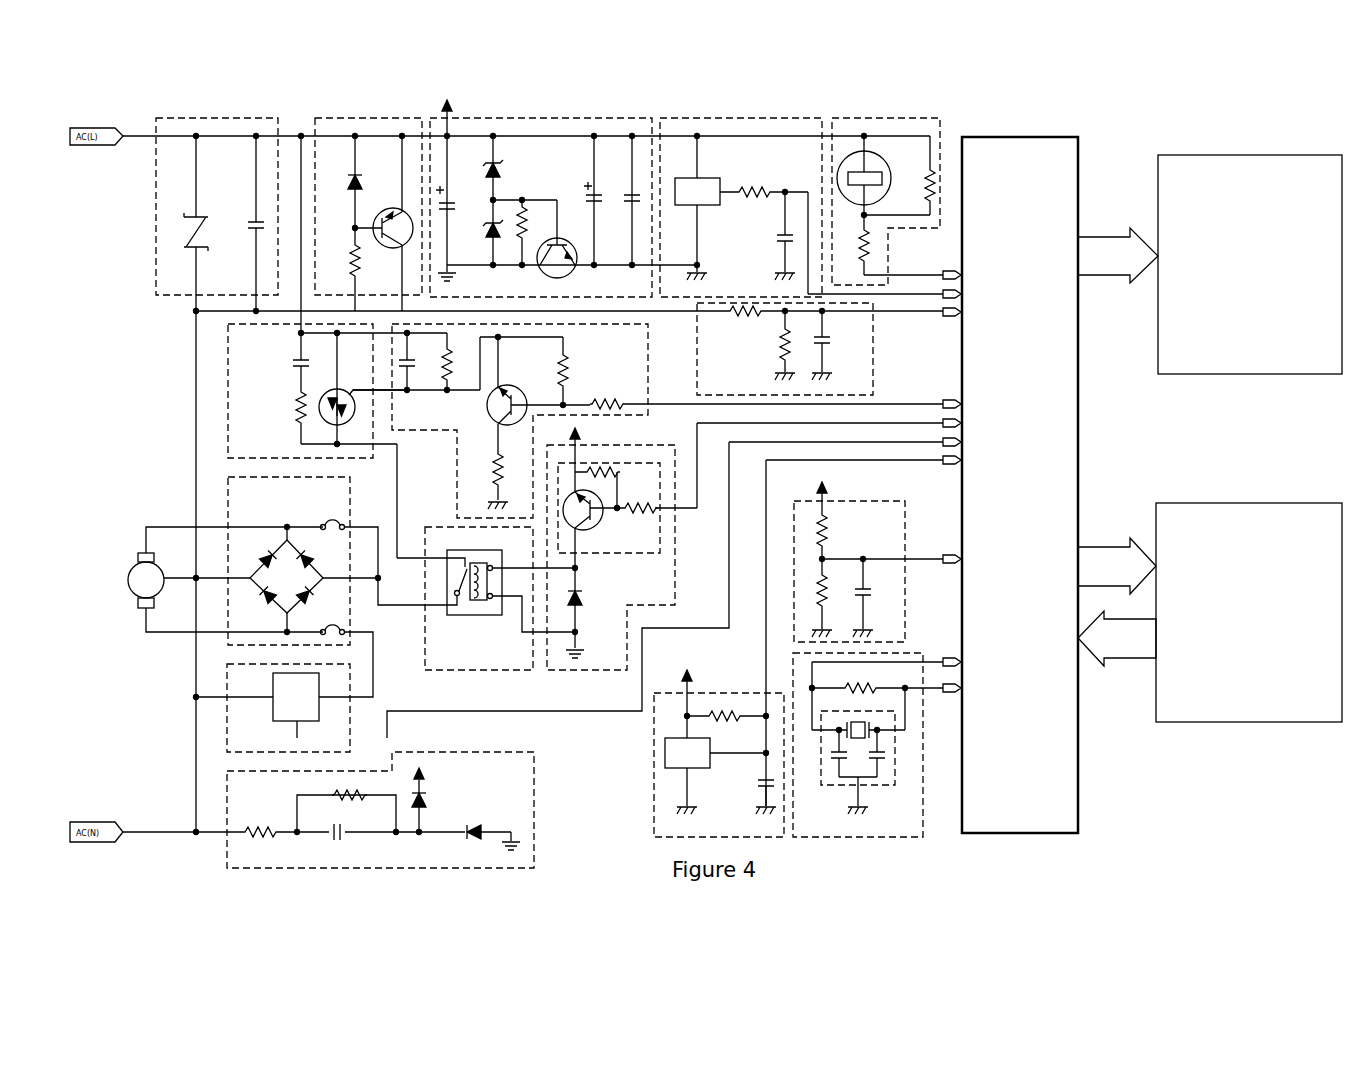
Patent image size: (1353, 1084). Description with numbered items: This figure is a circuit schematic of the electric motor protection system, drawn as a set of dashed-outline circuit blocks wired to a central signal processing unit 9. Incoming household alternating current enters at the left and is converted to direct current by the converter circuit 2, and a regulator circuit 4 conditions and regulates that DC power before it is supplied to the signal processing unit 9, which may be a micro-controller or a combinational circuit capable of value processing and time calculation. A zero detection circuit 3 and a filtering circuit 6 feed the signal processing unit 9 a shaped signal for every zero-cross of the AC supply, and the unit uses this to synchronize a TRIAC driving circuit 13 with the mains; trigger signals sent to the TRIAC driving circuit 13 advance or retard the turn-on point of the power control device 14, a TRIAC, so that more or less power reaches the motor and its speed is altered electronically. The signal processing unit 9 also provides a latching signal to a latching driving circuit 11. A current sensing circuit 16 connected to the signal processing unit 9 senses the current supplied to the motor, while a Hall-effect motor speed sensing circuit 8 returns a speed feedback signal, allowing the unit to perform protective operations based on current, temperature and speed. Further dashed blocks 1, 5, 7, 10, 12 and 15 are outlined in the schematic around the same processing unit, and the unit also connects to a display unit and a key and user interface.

The surge protection circuit 1 is at (217, 214).
The converter circuit 2 is at (380, 810).
The zero detection circuit 3 is at (368, 214).
The regulator circuit 4 is at (563, 198).
The voltage detector IC circuit 5 is at (741, 207).
The filtering circuit 6 is at (785, 349).
The oscillator circuit 7 is at (858, 745).
The motor speed sensing circuit 8 is at (719, 753).
The signal processing unit 9 is at (1152, 485).
The temperature sensing circuit 10 is at (849, 562).
The latching driving circuit 11 is at (622, 549).
The relay circuit 12 is at (518, 598).
The TRIAC driving circuit 13 is at (500, 421).
The power control device 14 is at (337, 441).
The AC/DC selection bridge rectifier circuit 15 is at (287, 587).
The current sensing circuit 16 is at (569, 435).